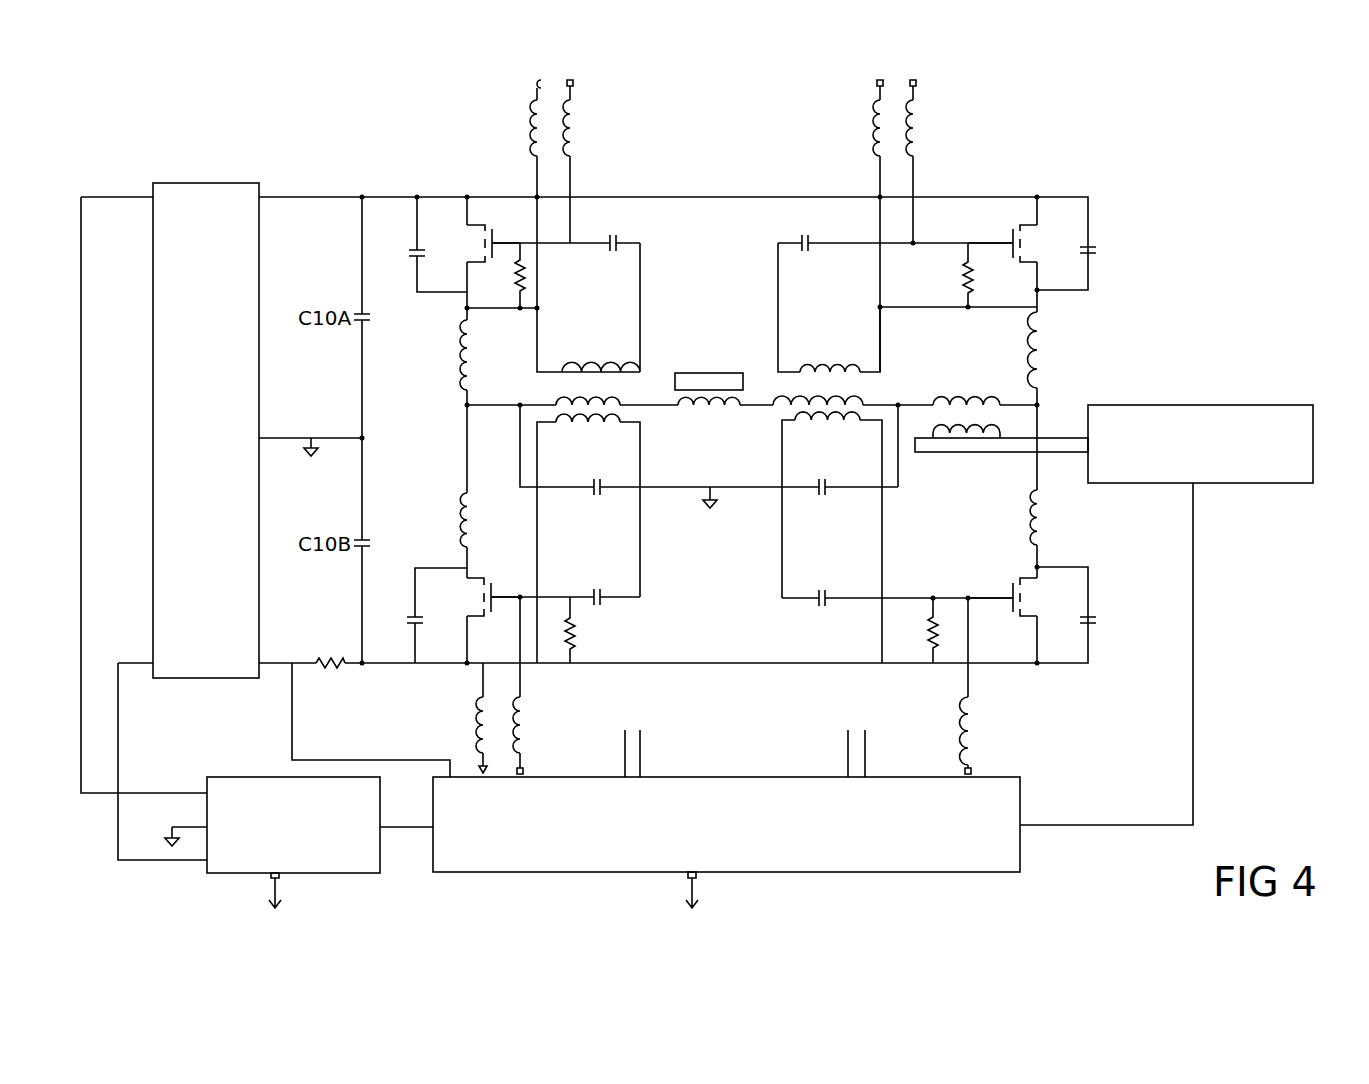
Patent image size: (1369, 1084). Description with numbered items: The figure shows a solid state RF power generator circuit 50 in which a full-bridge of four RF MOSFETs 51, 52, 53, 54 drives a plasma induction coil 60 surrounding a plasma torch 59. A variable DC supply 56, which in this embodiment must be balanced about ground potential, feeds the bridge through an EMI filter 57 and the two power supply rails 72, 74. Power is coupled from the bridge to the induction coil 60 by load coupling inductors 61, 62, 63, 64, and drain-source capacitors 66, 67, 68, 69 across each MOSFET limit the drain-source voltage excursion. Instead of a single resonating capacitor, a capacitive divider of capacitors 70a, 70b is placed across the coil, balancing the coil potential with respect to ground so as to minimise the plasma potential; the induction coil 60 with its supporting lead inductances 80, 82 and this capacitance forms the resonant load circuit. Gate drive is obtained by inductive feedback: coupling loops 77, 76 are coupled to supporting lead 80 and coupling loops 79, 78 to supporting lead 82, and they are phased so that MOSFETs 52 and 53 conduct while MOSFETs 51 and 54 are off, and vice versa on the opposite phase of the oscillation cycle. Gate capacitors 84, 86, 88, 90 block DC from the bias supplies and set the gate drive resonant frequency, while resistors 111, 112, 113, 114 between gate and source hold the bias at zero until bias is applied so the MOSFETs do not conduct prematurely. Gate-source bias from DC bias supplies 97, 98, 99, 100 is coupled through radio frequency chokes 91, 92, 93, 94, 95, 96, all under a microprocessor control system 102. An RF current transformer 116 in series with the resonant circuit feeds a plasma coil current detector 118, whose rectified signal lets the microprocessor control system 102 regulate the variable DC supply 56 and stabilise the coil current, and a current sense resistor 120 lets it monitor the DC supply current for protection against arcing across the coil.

The power generator circuit 50 is at (345, 155).
The RF MOSFET M1 51 is at (478, 592).
The RF MOSFET M2 52 is at (478, 238).
The RF MOSFET M3 53 is at (1030, 630).
The RF MOSFET M4 54 is at (1025, 228).
The variable DC supply 56 is at (228, 798).
The EMI filter 57 is at (200, 222).
The plasma torch 59 is at (682, 378).
The induction coil 60 is at (688, 408).
The load coupling inductor L1 61 is at (462, 500).
The load coupling inductor L2 62 is at (462, 335).
The load coupling inductor L3 63 is at (1040, 540).
The load coupling inductor L4 64 is at (1037, 340).
The drain-source capacitor C6 66 is at (410, 622).
The drain-source capacitor C7 67 is at (412, 254).
The drain-source capacitor C8 68 is at (1090, 626).
The drain-source capacitor C9 69 is at (1084, 248).
The capacitive divider capacitor C5A 70a is at (608, 489).
The capacitive divider capacitor C5B 70b is at (832, 489).
The power supply rail 72 is at (700, 197).
The power supply rail 74 is at (720, 663).
The coupling loop L6 76 is at (565, 382).
The coupling loop L7 77 is at (618, 425).
The coupling loop L8 78 is at (806, 378).
The coupling loop L9 79 is at (857, 428).
The supporting lead inductor L5B 80 is at (562, 400).
The supporting lead inductor L5C 82 is at (785, 407).
The gate capacitor C1 84 is at (608, 600).
The gate capacitor C2 86 is at (620, 247).
The gate capacitor C3 88 is at (818, 603).
The gate capacitor C4 90 is at (802, 250).
The radio frequency choke RFC1 91 is at (520, 703).
The radio frequency choke RFC2A 92 is at (535, 158).
The radio frequency choke RFC2B 93 is at (570, 158).
The radio frequency choke RFC3 94 is at (970, 748).
The radio frequency choke RFC4A 95 is at (876, 158).
The radio frequency choke RFC4B 96 is at (912, 158).
The DC bias supply 97 is at (505, 773).
The DC bias supply 98 is at (552, 93).
The DC bias supply 99 is at (975, 775).
The DC bias supply 100 is at (895, 92).
The microprocessor control system 102 is at (788, 792).
The resistor R1 111 is at (566, 632).
The resistor R2 112 is at (524, 276).
The resistor R3 113 is at (940, 625).
The resistor R4 114 is at (962, 283).
The RF current transformer T1 116 is at (968, 430).
The plasma coil current detector 118 is at (1277, 430).
The current sense resistor R5 120 is at (327, 666).